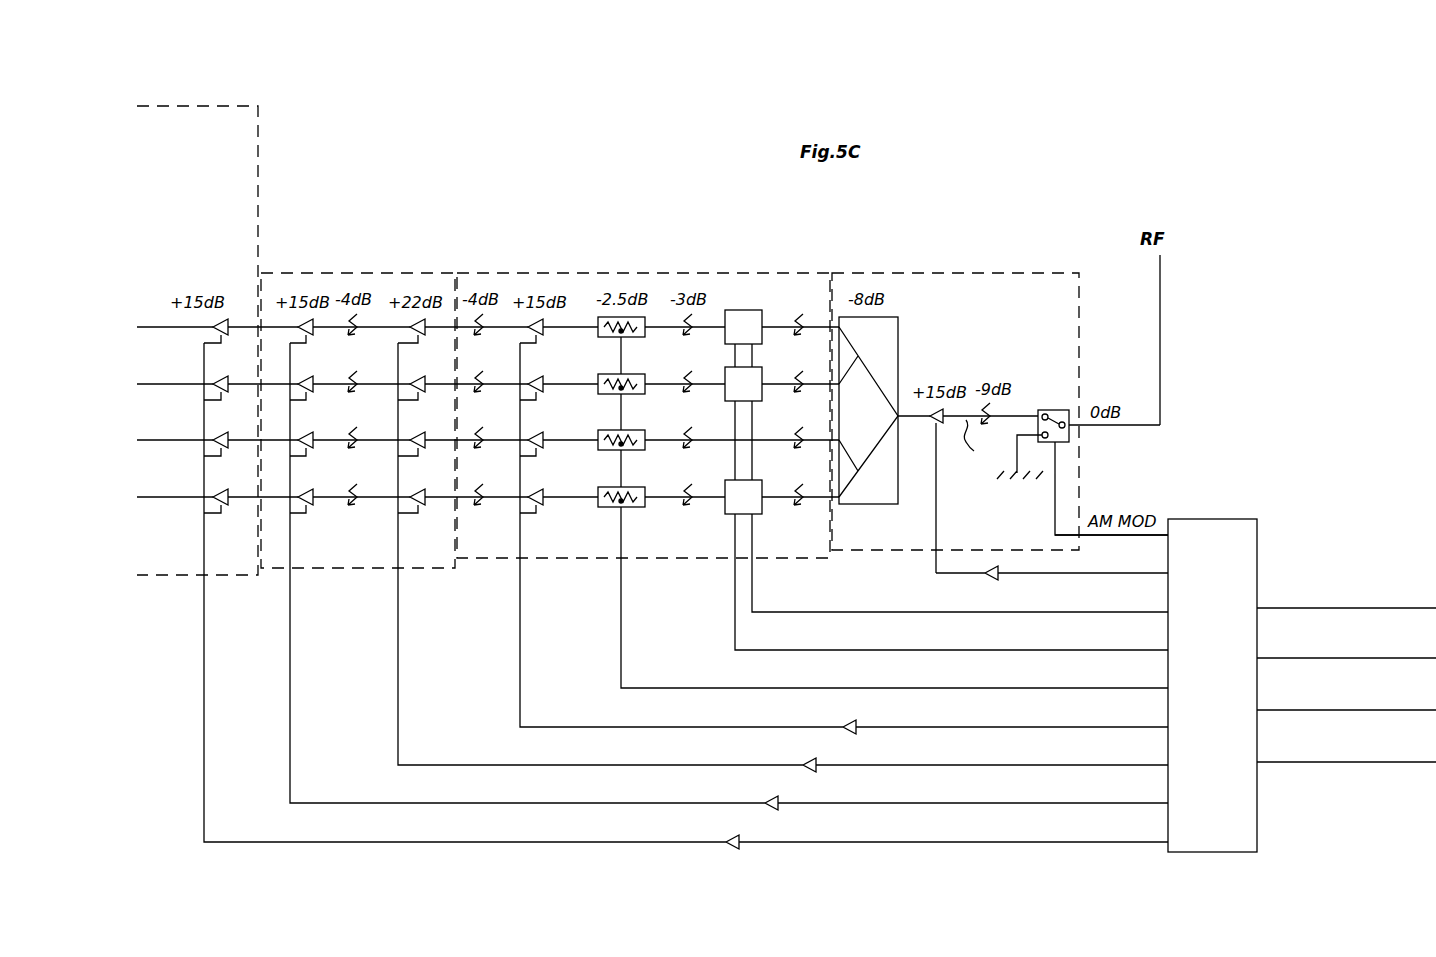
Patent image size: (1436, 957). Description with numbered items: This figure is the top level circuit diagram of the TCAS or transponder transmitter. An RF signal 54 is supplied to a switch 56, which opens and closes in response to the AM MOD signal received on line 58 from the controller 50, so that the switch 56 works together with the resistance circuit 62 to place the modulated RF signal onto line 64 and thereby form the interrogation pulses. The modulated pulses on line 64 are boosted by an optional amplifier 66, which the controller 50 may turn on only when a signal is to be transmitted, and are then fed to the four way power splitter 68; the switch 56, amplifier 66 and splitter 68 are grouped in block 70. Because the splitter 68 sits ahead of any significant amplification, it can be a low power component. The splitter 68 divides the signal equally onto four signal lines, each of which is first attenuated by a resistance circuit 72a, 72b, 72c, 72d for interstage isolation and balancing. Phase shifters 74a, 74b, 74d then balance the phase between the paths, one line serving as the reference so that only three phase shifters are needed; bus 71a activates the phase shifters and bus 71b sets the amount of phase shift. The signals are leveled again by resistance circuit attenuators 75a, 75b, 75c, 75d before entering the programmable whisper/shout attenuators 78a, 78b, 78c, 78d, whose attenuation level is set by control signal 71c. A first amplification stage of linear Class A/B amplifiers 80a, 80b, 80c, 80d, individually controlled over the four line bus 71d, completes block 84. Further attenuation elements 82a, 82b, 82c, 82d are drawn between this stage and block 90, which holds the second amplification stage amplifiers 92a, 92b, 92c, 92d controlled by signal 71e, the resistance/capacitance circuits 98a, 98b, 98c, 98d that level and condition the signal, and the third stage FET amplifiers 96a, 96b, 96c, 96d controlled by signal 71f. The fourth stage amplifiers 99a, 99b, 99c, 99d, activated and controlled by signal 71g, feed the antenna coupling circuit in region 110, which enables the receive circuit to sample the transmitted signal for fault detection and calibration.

The controller 50 is at (1208, 519).
The RF signal 54 is at (1160, 340).
The switch 56 is at (1044, 406).
The line 58 is at (1137, 538).
The resistance circuit 62 is at (994, 424).
The line 64 is at (980, 443).
The amplifier 66 is at (942, 420).
The four way power splitter 68 is at (868, 504).
The block 70 is at (934, 273).
The control signal line 71a is at (1075, 612).
The control signal line 71b is at (1075, 651).
The control signal 71c is at (1075, 689).
The four line signal bus 71d is at (1075, 727).
The control signal 71e is at (1075, 766).
The control signal 71f is at (1075, 804).
The control signal 71g is at (1075, 842).
The resistance circuit 72a is at (812, 335).
The resistance circuit 72b is at (812, 392).
The resistance circuit 72c is at (812, 448).
The resistance circuit 72d is at (812, 505).
The phase shifter 74a is at (762, 342).
The phase shifter 74b is at (762, 399).
The phase shifter 74d is at (762, 512).
The resistance circuit attenuator 75a is at (701, 335).
The resistance circuit attenuator 75b is at (701, 392).
The resistance circuit attenuator 75c is at (701, 448).
The resistance circuit attenuator 75d is at (702, 505).
The programmable whisper/shout attenuator 78a is at (645, 337).
The programmable whisper/shout attenuator 78b is at (645, 394).
The programmable whisper/shout attenuator 78c is at (645, 450).
The programmable whisper/shout attenuator 78d is at (645, 507).
The amplifier 80a is at (539, 329).
The amplifier 80b is at (539, 386).
The amplifier 80c is at (539, 442).
The amplifier 80d is at (539, 499).
The attenuator 82a is at (492, 335).
The attenuator 82b is at (492, 392).
The attenuator 82c is at (492, 448).
The attenuator 82d is at (492, 505).
The block 84 is at (642, 273).
The block 90 is at (345, 273).
The second amplification stage 92a is at (418, 329).
The second amplification stage 92b is at (418, 386).
The second amplification stage 92c is at (418, 442).
The second amplification stage 92d is at (418, 499).
The field effect transistor 96a is at (311, 329).
The field effect transistor 96b is at (311, 386).
The field effect transistor 96c is at (311, 442).
The field effect transistor 96d is at (311, 499).
The resistance/capacitance circuit 98a is at (366, 335).
The resistance/capacitance circuit 98b is at (366, 392).
The resistance/capacitance circuit 98c is at (366, 448).
The resistance/capacitance circuit 98d is at (366, 505).
The amplifier 99a is at (226, 329).
The amplifier 99b is at (226, 386).
The amplifier 99c is at (226, 442).
The amplifier 99d is at (226, 499).
The region 110 is at (258, 163).